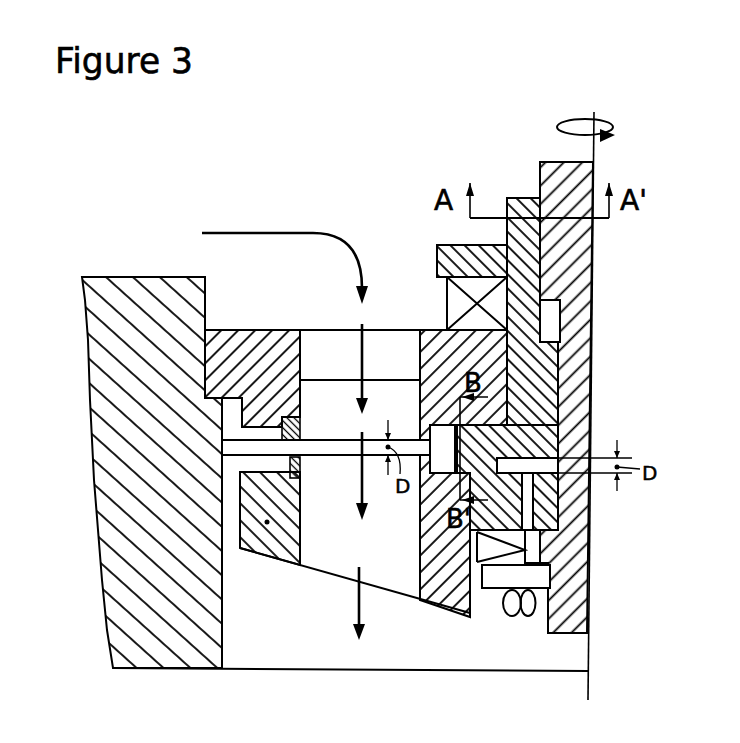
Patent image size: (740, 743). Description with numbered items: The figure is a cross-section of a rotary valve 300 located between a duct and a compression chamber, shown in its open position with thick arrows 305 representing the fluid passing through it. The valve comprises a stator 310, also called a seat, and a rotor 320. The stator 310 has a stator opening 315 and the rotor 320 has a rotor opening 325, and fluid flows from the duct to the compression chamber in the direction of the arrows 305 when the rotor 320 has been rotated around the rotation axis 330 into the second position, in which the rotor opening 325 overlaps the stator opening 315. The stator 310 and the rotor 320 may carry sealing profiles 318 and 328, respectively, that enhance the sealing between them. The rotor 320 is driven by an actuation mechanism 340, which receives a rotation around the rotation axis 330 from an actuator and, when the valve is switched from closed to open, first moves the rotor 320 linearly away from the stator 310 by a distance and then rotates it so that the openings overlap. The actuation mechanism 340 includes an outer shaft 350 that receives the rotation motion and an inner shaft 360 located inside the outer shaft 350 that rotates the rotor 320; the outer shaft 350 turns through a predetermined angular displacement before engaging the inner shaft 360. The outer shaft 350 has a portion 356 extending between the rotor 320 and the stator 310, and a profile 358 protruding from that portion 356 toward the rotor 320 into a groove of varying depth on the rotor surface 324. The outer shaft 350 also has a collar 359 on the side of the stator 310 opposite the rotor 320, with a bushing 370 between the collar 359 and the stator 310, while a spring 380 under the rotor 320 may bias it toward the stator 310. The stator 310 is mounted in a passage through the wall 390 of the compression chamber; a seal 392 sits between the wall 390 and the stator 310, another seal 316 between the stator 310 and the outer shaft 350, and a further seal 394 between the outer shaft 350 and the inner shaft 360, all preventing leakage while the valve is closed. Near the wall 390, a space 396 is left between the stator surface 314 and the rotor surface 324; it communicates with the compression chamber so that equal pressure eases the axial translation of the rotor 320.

The rotary valve 300 is at (264, 163).
The thick arrows 305 is at (304, 441).
The stator 310 is at (267, 432).
The surface of the stator 314 is at (216, 381).
The stator opening 315 is at (316, 328).
The seal 316 is at (508, 358).
The sealing profile 318 is at (282, 458).
The rotor 320 is at (252, 508).
The surface of the rotor 324 is at (267, 522).
The rotor opening 325 is at (322, 558).
The sealing profile 328 is at (245, 474).
The rotation axis 330 is at (587, 678).
The actuation mechanism 340 is at (572, 356).
The outer shaft 350 is at (521, 198).
The portion of the outer shaft 356 is at (482, 438).
The profile 358 is at (508, 478).
The collar 359 is at (444, 277).
The inner shaft 360 is at (553, 263).
The bushing 370 is at (447, 303).
The spring 380 is at (515, 565).
The wall 390 is at (143, 303).
The seal 392 is at (205, 347).
The seal 394 is at (558, 415).
The space 396 is at (222, 447).